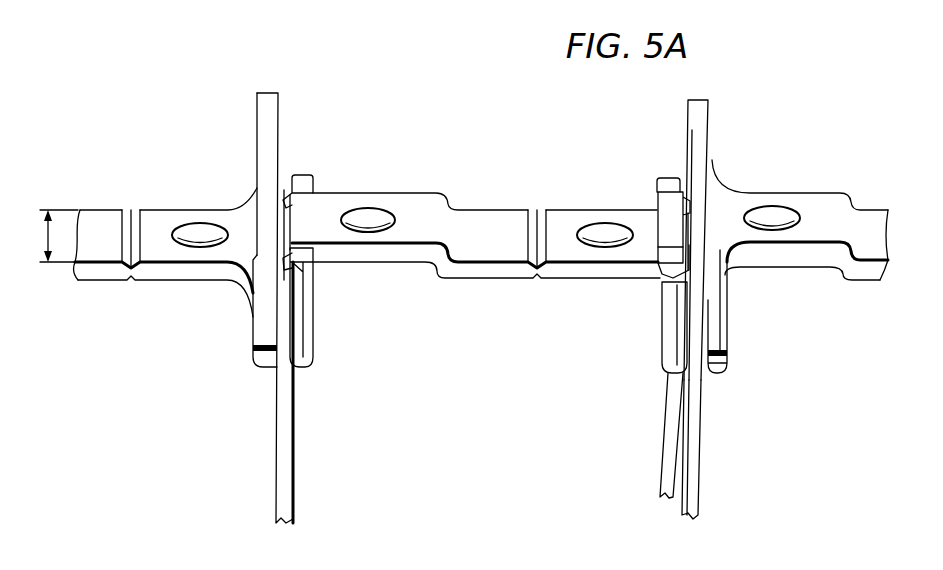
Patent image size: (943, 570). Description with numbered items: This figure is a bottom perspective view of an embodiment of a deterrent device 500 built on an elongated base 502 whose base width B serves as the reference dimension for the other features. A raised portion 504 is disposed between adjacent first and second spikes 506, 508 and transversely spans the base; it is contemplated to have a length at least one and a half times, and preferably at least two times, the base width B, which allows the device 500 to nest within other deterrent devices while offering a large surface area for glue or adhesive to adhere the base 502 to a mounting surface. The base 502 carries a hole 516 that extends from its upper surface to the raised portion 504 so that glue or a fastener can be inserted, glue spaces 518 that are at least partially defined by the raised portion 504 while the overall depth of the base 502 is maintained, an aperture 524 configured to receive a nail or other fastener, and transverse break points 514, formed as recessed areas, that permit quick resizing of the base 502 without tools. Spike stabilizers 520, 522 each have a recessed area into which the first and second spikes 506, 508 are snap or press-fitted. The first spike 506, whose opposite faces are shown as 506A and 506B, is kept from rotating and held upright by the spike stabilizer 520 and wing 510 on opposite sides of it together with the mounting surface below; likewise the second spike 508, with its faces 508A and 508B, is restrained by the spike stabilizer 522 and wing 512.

The deterrent device 500 is at (206, 87).
The base 502 is at (100, 282).
The raised portion 504 is at (98, 208).
The first spike 506 is at (297, 437).
The first side of first terminal pin 506A is at (295, 498).
The second side of first terminal pin 506B is at (282, 470).
The second spike 508 is at (660, 437).
The first leg of second terminal pin 508A is at (667, 473).
The second leg of second terminal pin 508B is at (693, 498).
The wing 510 is at (253, 328).
The wing 512 is at (702, 127).
The break point 514 is at (132, 208).
The hole 516 is at (199, 232).
The glue space 518 is at (177, 282).
The spike stabilizer 520 is at (302, 177).
The spike stabilizer 522 is at (667, 177).
The aperture 524 is at (367, 213).
The base width B is at (43, 235).